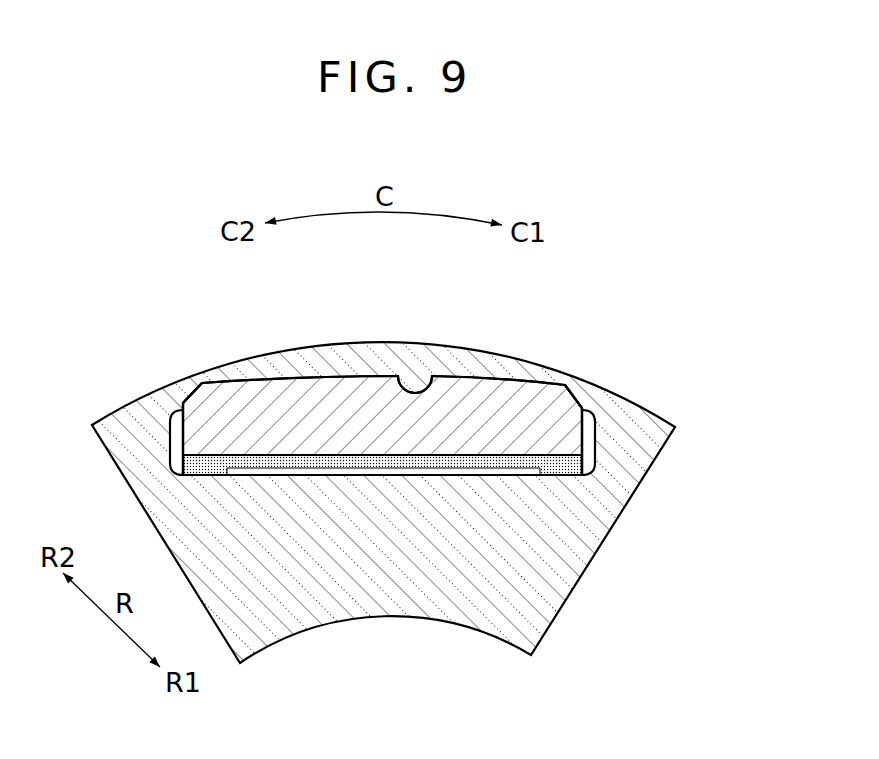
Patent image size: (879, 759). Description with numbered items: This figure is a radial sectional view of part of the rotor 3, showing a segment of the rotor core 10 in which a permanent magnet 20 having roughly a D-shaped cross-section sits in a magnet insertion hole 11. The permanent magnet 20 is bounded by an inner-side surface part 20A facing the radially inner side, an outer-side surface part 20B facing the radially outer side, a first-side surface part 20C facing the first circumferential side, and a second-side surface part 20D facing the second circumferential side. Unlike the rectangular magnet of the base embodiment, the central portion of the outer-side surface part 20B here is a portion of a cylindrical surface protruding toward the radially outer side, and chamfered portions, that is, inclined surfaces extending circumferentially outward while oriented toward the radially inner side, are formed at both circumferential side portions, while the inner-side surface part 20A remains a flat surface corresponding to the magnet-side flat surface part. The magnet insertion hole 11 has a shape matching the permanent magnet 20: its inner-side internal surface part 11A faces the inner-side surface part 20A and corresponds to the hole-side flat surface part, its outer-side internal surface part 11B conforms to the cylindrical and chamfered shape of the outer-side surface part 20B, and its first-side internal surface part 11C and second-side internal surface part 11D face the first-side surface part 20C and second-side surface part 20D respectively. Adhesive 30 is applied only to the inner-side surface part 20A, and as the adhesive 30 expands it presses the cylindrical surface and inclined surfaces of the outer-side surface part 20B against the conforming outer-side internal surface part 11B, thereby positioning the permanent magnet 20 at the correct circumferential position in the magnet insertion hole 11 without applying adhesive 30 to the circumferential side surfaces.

The rotor 3 is at (728, 396).
The rotor core 10 is at (553, 621).
The magnet insertion hole 11 is at (493, 377).
The inner-side internal surface part 11A is at (293, 476).
The outer-side internal surface part 11B is at (437, 377).
The first-side internal surface part 11C is at (597, 463).
The second-side internal surface part 11D is at (182, 426).
The permanent magnet 20 is at (243, 385).
The inner-side surface part 20A is at (487, 468).
The outer-side surface part 20B is at (318, 383).
The first-side surface part 20C is at (583, 422).
The second-side surface part 20D is at (183, 454).
The adhesive 30 is at (200, 478).